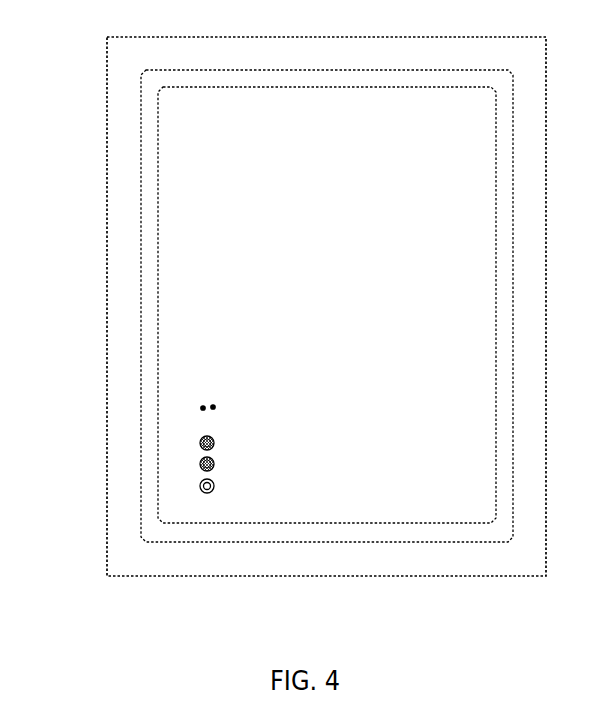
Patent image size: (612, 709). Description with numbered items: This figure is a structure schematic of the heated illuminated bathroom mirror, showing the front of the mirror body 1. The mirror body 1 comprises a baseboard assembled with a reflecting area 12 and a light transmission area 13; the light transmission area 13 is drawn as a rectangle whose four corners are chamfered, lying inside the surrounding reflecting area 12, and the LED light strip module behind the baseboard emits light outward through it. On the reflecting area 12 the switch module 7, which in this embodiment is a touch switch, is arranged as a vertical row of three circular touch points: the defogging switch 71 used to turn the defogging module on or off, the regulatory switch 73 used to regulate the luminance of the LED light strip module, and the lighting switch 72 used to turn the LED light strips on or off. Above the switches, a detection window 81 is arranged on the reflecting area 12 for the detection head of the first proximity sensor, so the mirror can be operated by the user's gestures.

The mirror body 1 is at (541, 312).
The reflecting area 12 is at (173, 250).
The light transmission area 13 is at (508, 490).
The switch module 7 is at (154, 529).
The defogging switch 71 is at (200, 447).
The lighting switch 72 is at (201, 493).
The regulatory switch 73 is at (200, 468).
The detection window 81 is at (201, 407).